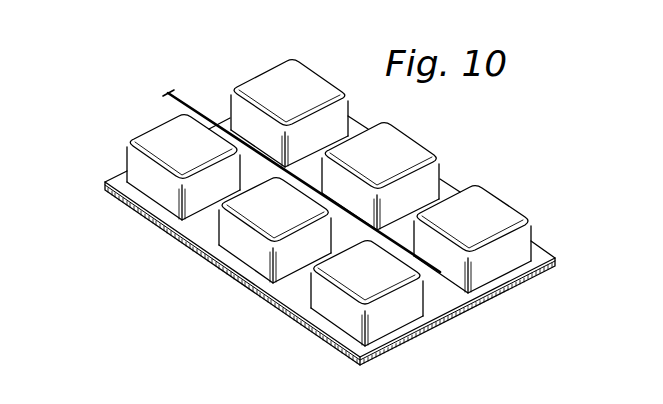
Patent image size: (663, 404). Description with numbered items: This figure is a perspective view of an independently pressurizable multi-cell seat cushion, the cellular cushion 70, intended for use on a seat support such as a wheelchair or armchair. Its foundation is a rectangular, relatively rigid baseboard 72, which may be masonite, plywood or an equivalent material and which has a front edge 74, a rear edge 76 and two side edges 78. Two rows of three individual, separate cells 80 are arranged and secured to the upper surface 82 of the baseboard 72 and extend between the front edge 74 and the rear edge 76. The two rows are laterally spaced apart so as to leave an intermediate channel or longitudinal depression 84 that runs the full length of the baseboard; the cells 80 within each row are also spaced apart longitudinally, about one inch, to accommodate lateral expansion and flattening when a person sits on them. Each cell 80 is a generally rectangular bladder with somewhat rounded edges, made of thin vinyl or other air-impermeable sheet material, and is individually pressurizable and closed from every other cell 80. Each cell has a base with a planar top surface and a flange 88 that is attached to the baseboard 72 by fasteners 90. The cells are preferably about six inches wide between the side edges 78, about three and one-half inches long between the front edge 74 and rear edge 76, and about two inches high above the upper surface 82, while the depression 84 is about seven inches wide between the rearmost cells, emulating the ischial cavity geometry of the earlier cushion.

The cellular cushion 70 is at (117, 139).
The baseboard 72 is at (199, 248).
The front edge 74 is at (117, 177).
The rear edge 76 is at (468, 303).
The side edges 78 is at (543, 245).
The cells 80 is at (305, 84).
The upper surface 82 is at (462, 302).
The longitudinal depression 84 is at (224, 129).
The flange 88 is at (160, 210).
The fasteners 90 is at (0, 370).